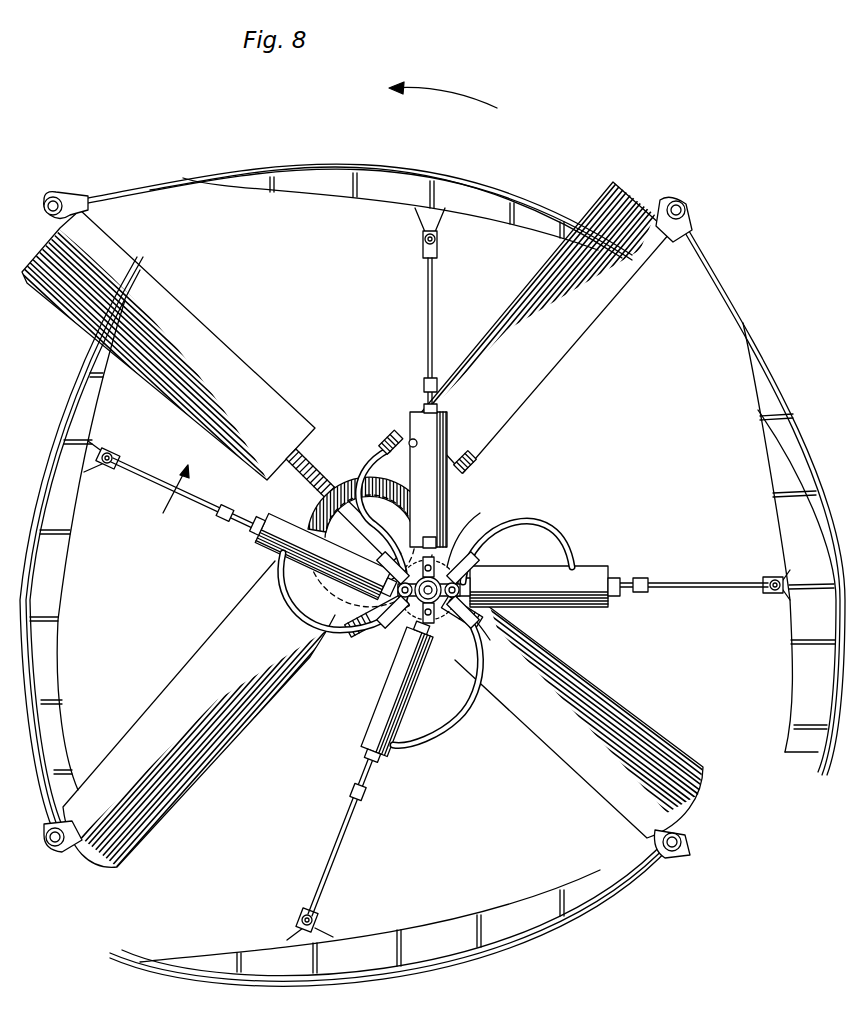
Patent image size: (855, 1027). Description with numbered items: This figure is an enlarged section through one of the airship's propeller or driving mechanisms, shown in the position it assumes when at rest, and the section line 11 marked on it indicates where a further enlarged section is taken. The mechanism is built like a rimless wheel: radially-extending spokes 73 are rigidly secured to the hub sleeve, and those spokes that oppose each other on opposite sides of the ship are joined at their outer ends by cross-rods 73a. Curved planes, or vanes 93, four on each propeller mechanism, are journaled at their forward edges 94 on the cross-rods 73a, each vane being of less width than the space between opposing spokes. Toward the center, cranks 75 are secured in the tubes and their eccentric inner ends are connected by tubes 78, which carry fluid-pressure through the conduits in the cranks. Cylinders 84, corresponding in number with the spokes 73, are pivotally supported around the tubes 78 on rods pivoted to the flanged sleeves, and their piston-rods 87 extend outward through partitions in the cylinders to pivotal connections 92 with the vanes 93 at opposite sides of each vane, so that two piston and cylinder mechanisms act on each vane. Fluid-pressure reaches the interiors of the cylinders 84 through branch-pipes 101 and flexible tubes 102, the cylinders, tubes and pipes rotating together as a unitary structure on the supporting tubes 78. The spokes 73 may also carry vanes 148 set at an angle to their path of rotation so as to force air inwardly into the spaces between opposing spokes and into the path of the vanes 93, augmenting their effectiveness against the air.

The vanes on spokes 148 is at (196, 394).
The spokes 73 is at (283, 481).
The cross-rods 73a is at (60, 198).
The cranks 75 is at (373, 607).
The tubes 78 is at (436, 625).
The cylinders 84 is at (440, 462).
The piston-rods 87 is at (428, 268).
The pivotal connection 92 is at (437, 241).
The curved vanes 93 is at (394, 167).
The forward edges of vanes 94 is at (688, 209).
The branch-pipes 101 is at (480, 513).
The flexible tubes 102 is at (357, 480).
The section line 11 is at (163, 513).